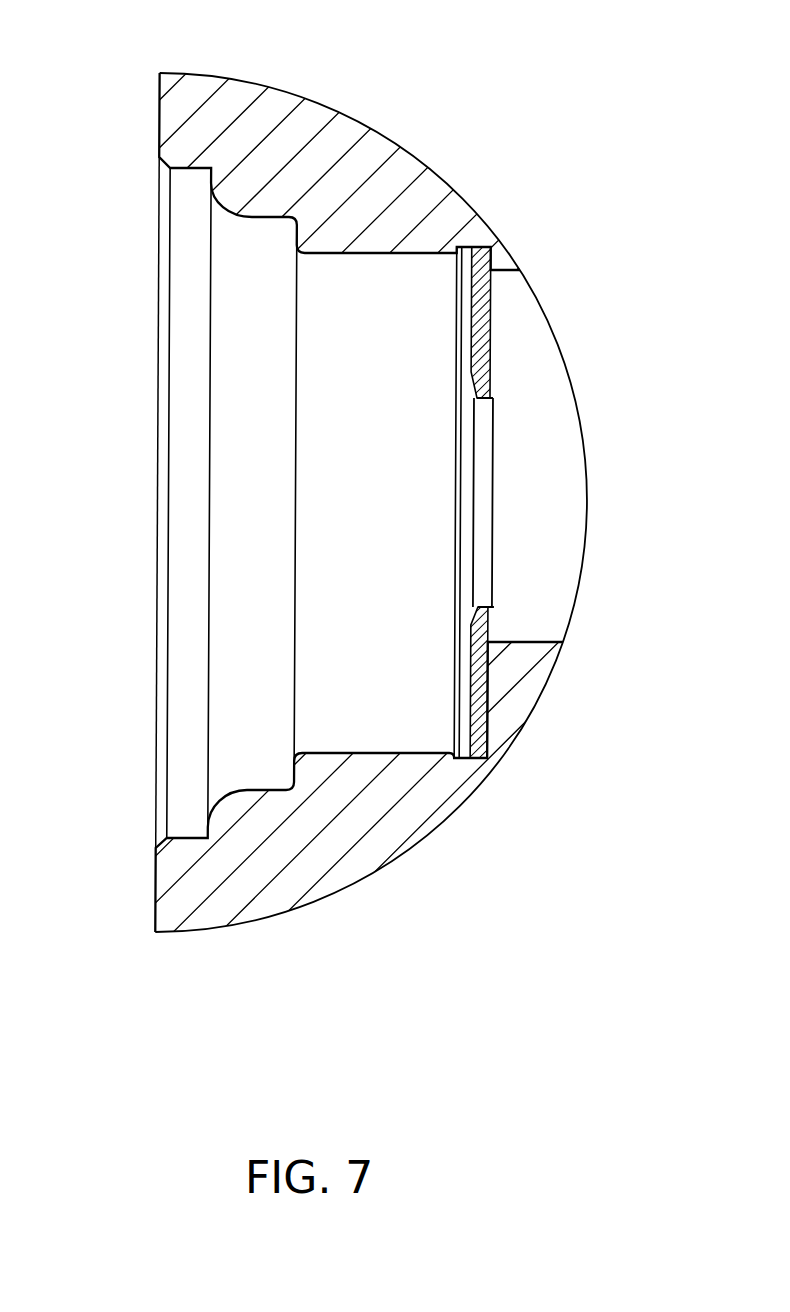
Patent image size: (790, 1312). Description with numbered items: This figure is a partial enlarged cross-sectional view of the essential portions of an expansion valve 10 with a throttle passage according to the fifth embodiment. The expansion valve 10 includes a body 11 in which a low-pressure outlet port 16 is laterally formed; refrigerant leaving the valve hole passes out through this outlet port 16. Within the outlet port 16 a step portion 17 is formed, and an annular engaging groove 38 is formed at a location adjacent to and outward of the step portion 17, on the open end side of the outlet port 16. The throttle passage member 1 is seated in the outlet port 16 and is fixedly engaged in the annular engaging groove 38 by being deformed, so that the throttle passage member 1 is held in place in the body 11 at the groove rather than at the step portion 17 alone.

The expansion valve 10 is at (395, 648).
The body 11 is at (395, 648).
The outlet port 16 is at (232, 503).
The throttle passage member 1 is at (499, 470).
The step portion 17 is at (498, 645).
The annular engaging groove 38 is at (458, 502).